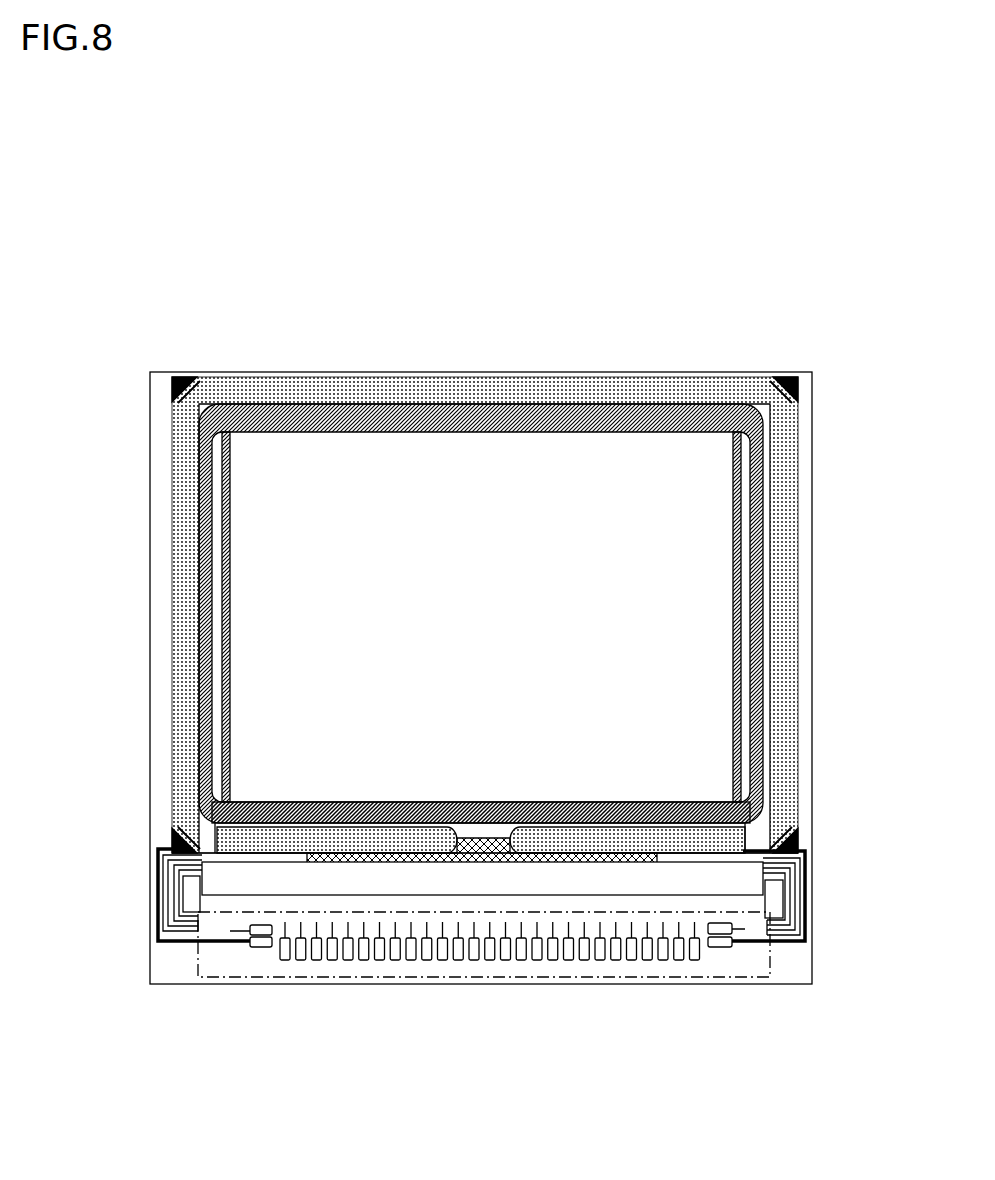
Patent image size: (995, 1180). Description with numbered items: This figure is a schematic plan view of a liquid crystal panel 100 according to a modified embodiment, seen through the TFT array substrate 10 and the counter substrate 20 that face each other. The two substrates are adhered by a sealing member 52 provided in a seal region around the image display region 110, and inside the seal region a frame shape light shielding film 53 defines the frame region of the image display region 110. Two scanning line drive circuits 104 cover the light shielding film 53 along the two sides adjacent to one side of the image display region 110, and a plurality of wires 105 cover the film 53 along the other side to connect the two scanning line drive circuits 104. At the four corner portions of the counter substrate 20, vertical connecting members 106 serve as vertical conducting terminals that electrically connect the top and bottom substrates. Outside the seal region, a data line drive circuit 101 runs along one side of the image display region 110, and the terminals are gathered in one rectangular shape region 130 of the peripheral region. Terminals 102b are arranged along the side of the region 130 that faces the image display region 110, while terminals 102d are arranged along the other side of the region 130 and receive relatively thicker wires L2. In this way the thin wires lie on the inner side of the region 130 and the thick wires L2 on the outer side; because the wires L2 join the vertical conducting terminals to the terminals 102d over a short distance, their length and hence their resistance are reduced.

The liquid crystal panel 100 is at (590, 232).
The TFT array substrate 10 is at (345, 372).
The counter substrate 20 is at (627, 372).
The sealing member 52 is at (793, 594).
The frame shape light shielding film 53 is at (741, 795).
The scanning line drive circuit 104 is at (747, 676).
The wires 105 is at (453, 373).
The vertical connecting member 106 is at (180, 372).
The image display region 110 is at (482, 617).
The data line drive circuit 101 is at (222, 887).
The terminals 102b is at (522, 960).
The terminals 102d is at (260, 947).
The one rectangular shape region 130 is at (773, 975).
The wires L2 is at (150, 898).